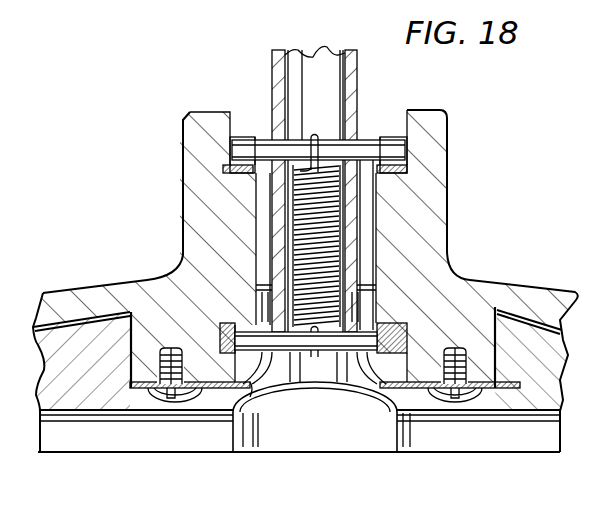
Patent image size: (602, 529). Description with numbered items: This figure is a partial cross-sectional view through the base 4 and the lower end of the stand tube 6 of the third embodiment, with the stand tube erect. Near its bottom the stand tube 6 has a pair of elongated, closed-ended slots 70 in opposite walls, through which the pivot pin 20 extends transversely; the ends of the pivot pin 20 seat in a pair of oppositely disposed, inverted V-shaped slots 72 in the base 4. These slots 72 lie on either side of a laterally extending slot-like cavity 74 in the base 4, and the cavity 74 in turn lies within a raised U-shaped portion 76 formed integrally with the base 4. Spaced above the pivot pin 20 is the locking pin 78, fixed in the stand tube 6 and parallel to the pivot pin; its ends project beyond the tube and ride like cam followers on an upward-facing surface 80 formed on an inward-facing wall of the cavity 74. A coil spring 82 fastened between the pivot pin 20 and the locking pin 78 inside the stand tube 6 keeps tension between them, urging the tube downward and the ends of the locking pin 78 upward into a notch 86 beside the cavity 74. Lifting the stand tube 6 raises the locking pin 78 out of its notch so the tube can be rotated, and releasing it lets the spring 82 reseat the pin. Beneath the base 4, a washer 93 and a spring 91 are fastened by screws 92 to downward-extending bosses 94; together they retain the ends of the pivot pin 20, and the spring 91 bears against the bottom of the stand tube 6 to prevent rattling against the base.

The base 4 is at (90, 297).
The stand tube 6 is at (272, 68).
The pivot pin 20 is at (406, 362).
The elongated closed-ended slots 70 is at (272, 294).
The inverted V-shaped slots 72 is at (222, 360).
The slot-like cavity 74 is at (364, 228).
The raised U-shaped portion 76 is at (180, 163).
The locking pin 78 is at (403, 149).
The upward-facing surface 80 is at (388, 137).
The coil spring 82 is at (322, 204).
The notch 86 is at (408, 172).
The spring 91 is at (221, 388).
The screws 92 is at (150, 398).
The washer 93 is at (413, 372).
The downward-extending bosses 94 is at (120, 318).